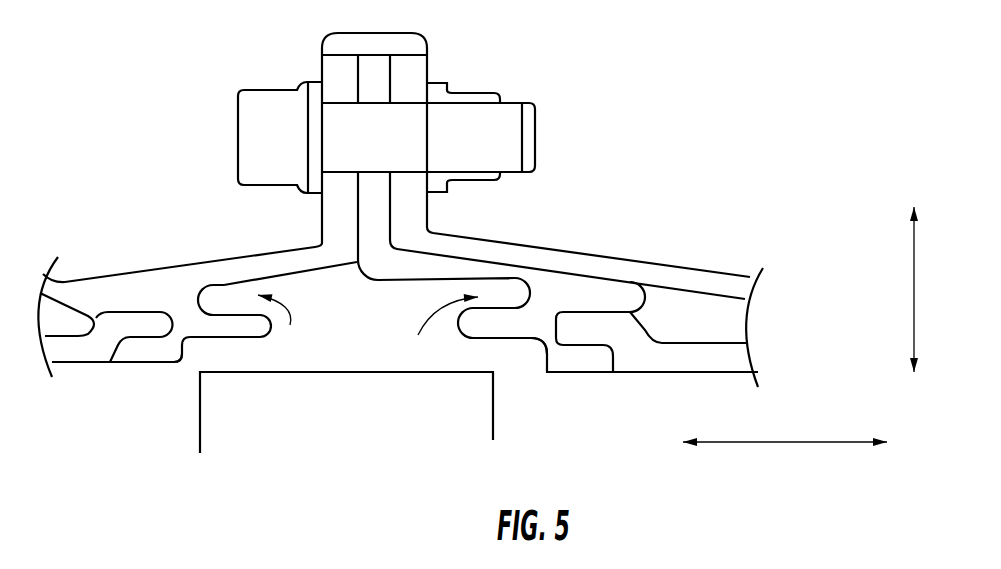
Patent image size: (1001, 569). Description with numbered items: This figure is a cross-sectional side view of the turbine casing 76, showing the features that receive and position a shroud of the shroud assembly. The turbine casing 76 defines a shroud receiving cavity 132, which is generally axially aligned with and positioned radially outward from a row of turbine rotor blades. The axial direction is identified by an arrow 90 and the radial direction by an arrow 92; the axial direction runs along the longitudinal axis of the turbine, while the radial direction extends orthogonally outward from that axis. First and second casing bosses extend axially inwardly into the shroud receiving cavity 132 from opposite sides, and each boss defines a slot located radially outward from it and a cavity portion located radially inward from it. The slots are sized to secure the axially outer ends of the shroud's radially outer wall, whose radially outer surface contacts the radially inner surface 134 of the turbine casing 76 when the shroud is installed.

The turbine casing 76 is at (155, 283).
The axial direction arrow 90 is at (780, 443).
The radial direction arrow 92 is at (915, 280).
The shroud receiving cavity 132 is at (363, 317).
The radially inner surface of the turbine casing 134 is at (320, 272).